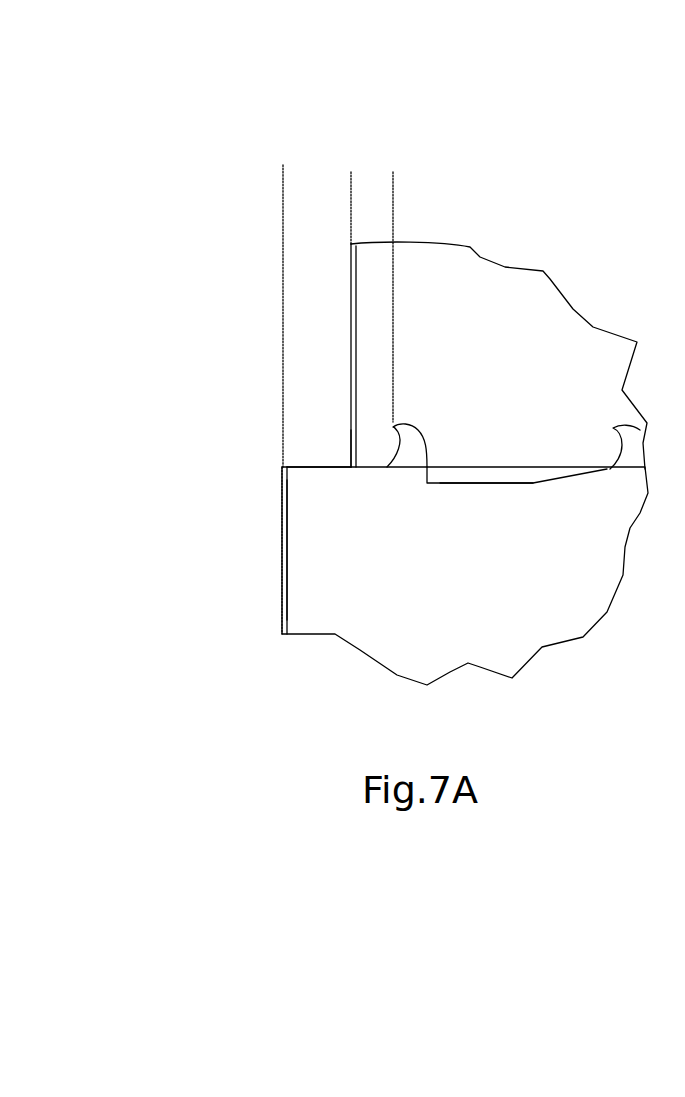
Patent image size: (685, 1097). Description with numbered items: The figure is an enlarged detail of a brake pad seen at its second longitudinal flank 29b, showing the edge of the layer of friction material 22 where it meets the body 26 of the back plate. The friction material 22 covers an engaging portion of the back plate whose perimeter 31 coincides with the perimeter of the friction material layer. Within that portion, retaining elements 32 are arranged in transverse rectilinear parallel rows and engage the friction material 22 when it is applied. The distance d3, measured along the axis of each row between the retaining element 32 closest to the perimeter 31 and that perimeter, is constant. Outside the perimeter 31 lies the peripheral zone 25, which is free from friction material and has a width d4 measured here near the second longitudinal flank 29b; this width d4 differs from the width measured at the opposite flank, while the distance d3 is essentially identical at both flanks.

The friction material 22 is at (460, 317).
The lower body part 26 is at (480, 577).
The peripheral zone 25 is at (315, 468).
The perimeter 31 is at (348, 467).
The retaining element 32 is at (475, 454).
The second longitudinal flank 29b is at (282, 543).
The distance d3 is at (372, 280).
The width d4 is at (299, 316).